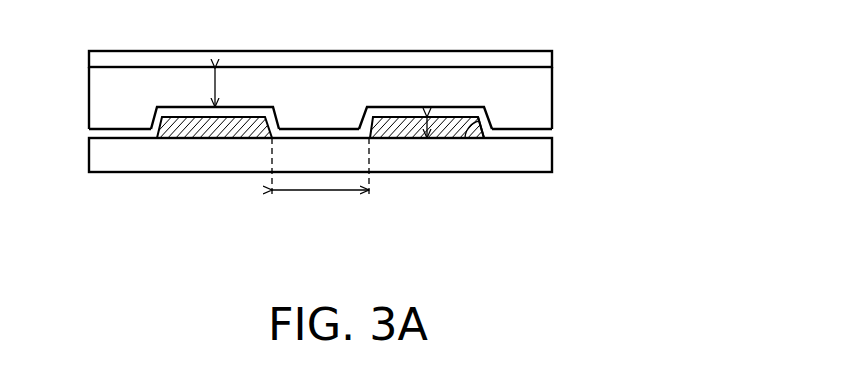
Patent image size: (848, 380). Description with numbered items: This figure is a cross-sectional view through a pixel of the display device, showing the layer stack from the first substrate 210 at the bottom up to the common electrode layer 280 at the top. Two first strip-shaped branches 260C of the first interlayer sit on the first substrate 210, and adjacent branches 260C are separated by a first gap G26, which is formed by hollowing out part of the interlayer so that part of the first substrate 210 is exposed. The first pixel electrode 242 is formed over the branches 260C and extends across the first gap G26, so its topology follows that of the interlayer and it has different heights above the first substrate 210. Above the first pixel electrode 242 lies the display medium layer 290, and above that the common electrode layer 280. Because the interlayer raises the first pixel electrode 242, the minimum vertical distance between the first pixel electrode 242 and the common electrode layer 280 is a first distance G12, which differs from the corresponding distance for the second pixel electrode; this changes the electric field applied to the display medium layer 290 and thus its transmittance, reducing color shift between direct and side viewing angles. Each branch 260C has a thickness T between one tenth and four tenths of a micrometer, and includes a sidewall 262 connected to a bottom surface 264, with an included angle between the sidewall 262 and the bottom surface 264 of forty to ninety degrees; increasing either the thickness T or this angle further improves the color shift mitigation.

The first substrate 210 is at (528, 157).
The first pixel electrode 242 is at (535, 135).
The common electrode layer 280 is at (535, 62).
The display medium layer 290 is at (537, 105).
The first strip-shaped branches 260C is at (233, 128).
The sidewall 262 is at (484, 127).
The bottom surface 264 is at (442, 140).
The first distance G12 is at (208, 87).
The first gap G26 is at (320, 181).
The thickness T is at (421, 128).